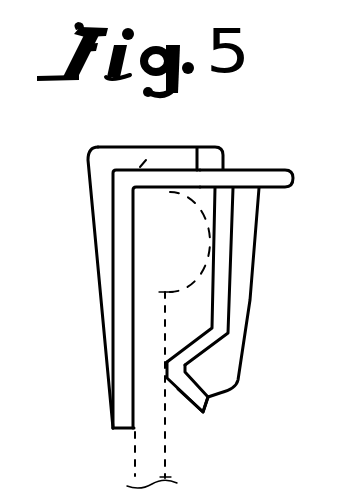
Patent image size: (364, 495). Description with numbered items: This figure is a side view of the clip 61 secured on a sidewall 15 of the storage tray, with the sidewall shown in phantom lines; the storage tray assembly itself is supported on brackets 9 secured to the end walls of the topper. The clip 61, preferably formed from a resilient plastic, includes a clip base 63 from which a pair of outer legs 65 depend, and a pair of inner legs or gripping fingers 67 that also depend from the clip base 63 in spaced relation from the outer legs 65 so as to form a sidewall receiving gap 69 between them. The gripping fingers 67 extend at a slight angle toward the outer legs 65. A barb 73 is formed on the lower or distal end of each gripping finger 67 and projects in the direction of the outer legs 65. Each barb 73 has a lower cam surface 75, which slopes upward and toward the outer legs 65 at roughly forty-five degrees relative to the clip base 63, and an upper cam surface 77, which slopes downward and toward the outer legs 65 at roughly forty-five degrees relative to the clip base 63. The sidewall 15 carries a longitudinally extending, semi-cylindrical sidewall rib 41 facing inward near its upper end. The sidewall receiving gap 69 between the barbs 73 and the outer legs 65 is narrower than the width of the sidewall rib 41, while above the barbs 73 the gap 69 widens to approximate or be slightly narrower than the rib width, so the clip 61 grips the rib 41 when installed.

The clip 61 is at (294, 100).
The clip base 63 is at (252, 166).
The bracket 9 is at (148, 370).
The sidewall receiving gap 69 is at (133, 243).
The sidewall 15 is at (147, 352).
The outer leg 65 is at (117, 413).
The sidewall rib 41 is at (200, 212).
The gripping finger 67 is at (254, 287).
The upper cam surface 77 is at (184, 337).
The barb 73 is at (187, 370).
The lower cam surface 75 is at (186, 402).